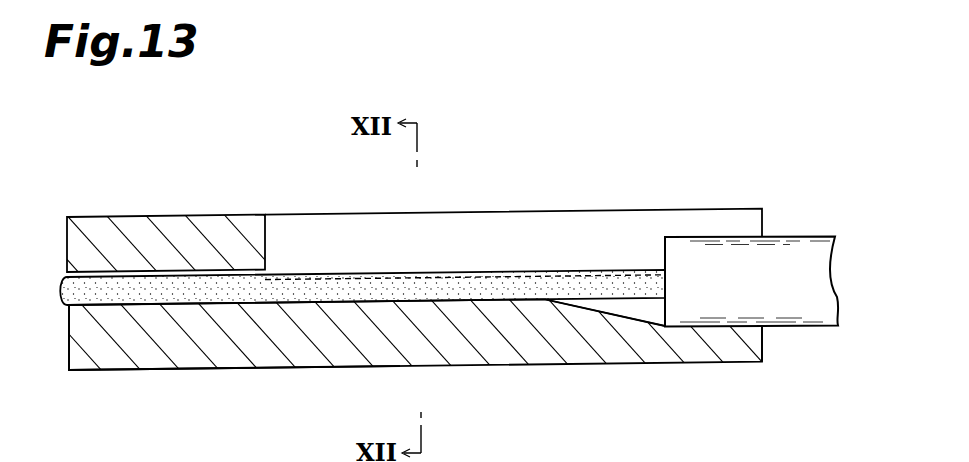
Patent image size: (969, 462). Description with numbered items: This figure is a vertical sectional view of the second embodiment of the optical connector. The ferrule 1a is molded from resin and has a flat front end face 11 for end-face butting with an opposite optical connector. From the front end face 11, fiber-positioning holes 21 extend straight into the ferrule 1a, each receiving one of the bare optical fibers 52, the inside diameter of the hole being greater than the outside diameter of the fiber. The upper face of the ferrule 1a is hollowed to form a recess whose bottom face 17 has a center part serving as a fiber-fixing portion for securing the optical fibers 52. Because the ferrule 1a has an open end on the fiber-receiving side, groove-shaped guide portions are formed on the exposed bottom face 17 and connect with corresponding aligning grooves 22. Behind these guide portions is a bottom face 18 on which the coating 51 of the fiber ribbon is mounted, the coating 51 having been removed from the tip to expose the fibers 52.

The ferrule 1a is at (135, 215).
The front end face 11 is at (68, 330).
The bottom face 17 is at (569, 273).
The bottom face 18 is at (717, 327).
The fiber-positioning hole 21 is at (226, 270).
The aligning groove 22 is at (246, 306).
The coating 51 is at (812, 236).
The optical fiber 52 is at (494, 272).